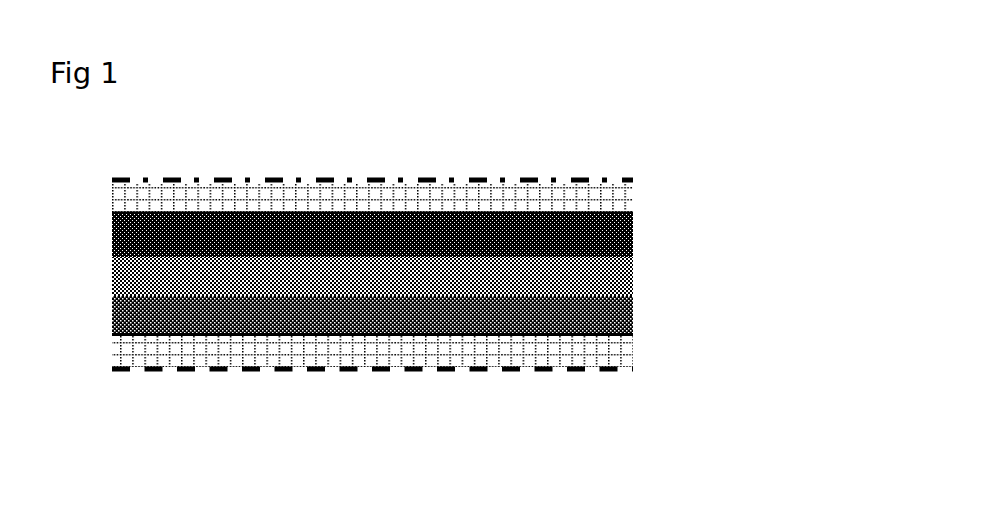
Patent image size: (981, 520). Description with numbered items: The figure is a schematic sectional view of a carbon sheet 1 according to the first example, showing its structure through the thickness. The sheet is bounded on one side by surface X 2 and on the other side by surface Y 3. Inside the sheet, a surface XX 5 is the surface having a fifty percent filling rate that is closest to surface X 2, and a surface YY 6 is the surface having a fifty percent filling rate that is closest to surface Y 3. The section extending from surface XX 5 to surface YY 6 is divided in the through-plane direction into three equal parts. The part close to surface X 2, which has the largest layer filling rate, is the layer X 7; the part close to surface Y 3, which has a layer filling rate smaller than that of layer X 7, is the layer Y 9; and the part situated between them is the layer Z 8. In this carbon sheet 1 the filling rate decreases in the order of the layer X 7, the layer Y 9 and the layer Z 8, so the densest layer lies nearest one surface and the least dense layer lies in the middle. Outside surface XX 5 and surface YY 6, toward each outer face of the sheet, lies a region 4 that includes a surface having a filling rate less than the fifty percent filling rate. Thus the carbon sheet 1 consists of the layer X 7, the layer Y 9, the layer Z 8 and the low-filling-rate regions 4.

The carbon sheet 1 is at (98, 182).
The surface X 2 is at (503, 177).
The surface Y 3 is at (502, 373).
The region including a surface having a filling rate less than the 50% filling rate 4 is at (598, 198).
The surface XX 5 is at (635, 213).
The surface YY 6 is at (635, 340).
The layer X 7 is at (642, 218).
The layer Z 8 is at (642, 260).
The layer Y 9 is at (642, 300).